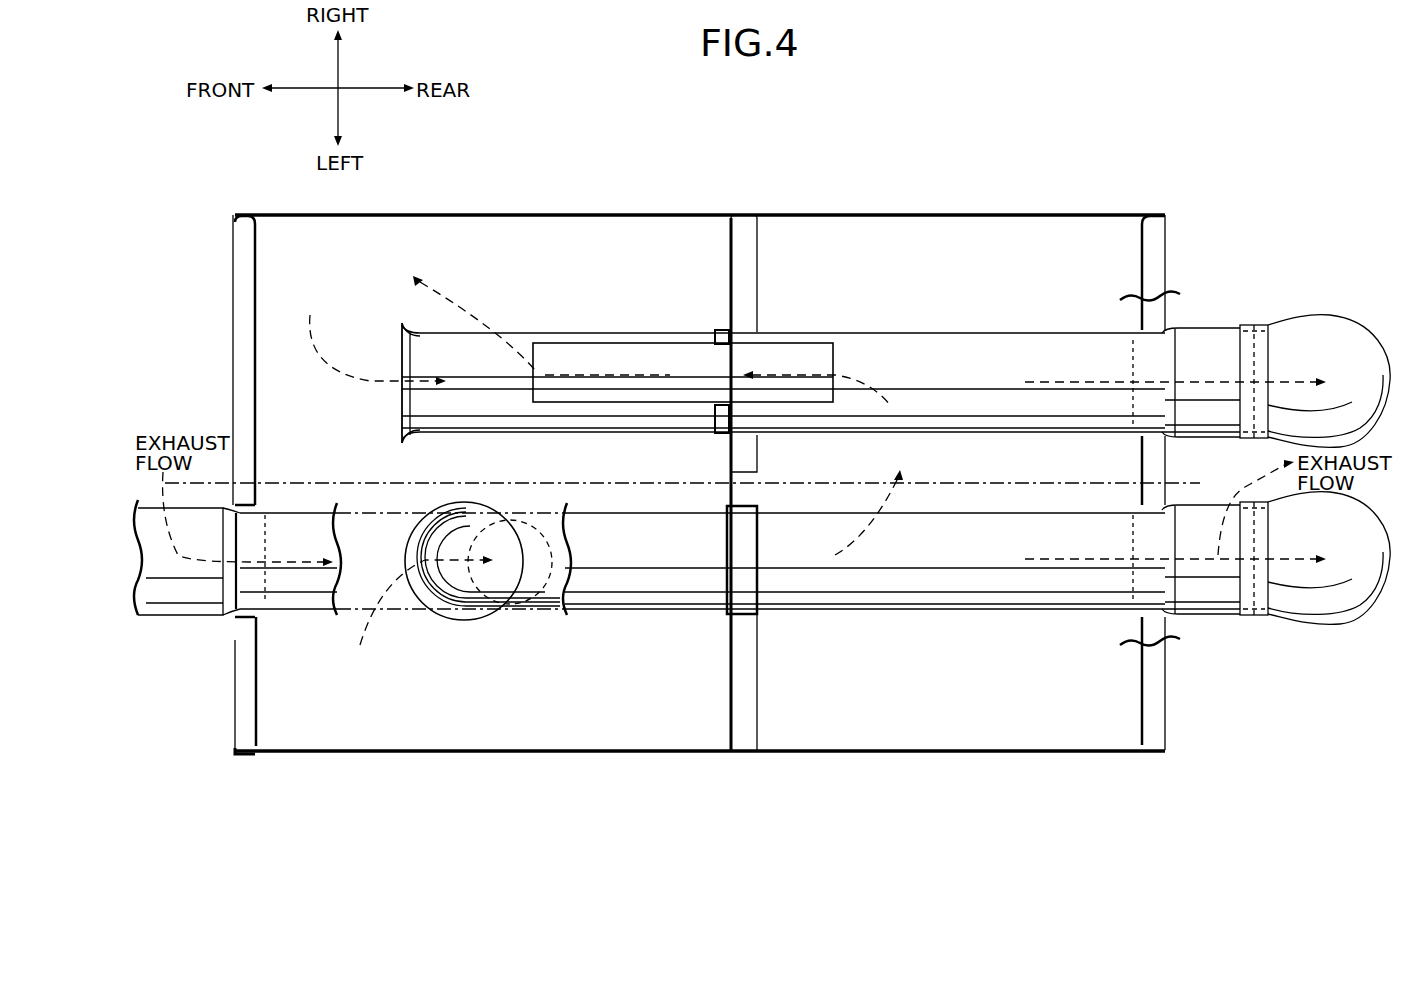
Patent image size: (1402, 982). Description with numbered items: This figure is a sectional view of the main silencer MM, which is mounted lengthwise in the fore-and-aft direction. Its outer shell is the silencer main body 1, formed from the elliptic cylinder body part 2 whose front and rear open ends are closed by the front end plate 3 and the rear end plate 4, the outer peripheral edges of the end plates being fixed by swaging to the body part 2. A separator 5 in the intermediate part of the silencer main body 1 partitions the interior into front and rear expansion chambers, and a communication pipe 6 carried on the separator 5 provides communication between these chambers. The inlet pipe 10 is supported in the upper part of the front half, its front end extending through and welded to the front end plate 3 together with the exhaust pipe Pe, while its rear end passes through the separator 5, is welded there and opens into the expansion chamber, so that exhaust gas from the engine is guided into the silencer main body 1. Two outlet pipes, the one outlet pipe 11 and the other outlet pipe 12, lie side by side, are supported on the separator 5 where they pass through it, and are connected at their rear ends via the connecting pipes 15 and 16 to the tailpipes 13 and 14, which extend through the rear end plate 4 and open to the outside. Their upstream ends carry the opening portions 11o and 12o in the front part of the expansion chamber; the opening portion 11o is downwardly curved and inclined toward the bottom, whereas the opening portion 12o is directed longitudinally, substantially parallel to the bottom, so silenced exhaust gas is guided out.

The silencer main body 1 is at (881, 212).
The elliptic cylinder body part 2 is at (1017, 213).
The front end plate 3 is at (255, 293).
The rear end plate 4 is at (1160, 250).
The separator 5 is at (728, 258).
The communication pipe 6 is at (805, 345).
The inlet pipe 10 is at (655, 590).
The one outlet pipe 11 is at (552, 597).
The opening portion 11o is at (477, 512).
The other outlet pipe 12 is at (520, 340).
The opening portion 12o is at (400, 343).
The tailpipe 13 is at (1327, 605).
The tailpipe 14 is at (1312, 337).
The connecting pipe 15 is at (1215, 597).
The connecting pipe 16 is at (1213, 350).
The exhaust pipe Pe is at (192, 600).
The main silencer MM is at (600, 206).